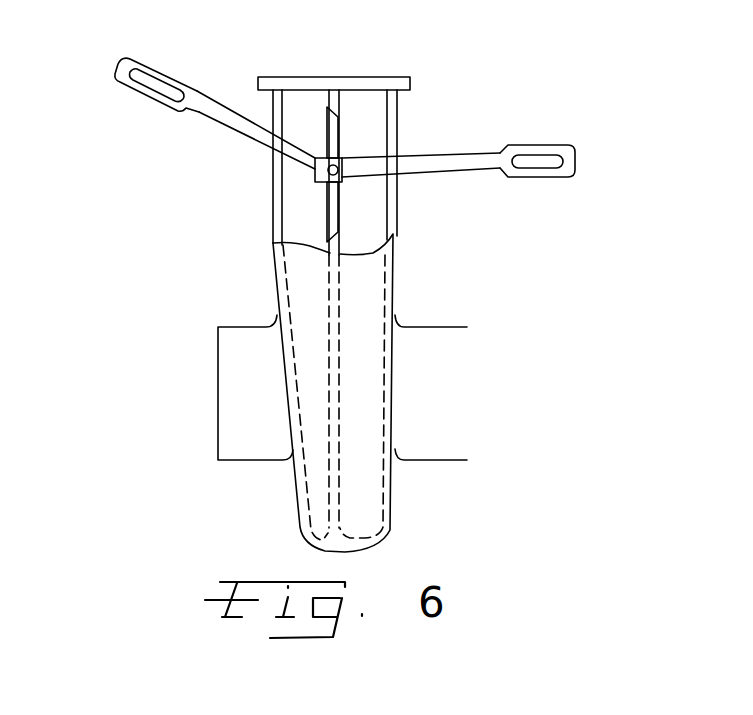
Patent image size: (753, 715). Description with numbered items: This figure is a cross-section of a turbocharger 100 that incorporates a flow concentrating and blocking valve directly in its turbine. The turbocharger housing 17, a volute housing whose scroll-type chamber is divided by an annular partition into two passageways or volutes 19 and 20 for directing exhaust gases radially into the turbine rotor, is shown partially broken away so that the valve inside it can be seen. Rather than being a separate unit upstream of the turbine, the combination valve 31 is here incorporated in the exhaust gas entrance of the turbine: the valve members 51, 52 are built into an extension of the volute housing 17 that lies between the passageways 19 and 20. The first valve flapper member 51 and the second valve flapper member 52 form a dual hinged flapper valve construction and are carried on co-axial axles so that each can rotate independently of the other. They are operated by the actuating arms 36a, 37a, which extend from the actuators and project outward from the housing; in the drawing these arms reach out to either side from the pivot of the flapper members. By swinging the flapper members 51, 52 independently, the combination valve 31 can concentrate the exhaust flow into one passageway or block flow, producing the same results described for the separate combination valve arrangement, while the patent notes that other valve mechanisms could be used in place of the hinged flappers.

The volute housing 17 is at (380, 77).
The passageway 19 is at (300, 302).
The passageway 20 is at (369, 245).
The combination valve 31 is at (415, 122).
The actuating arm 36a is at (133, 95).
The actuating arm 37a is at (575, 150).
The first valve flapper member 51 is at (338, 142).
The second valve flapper member 52 is at (338, 222).
The turbocharger 100 is at (160, 401).